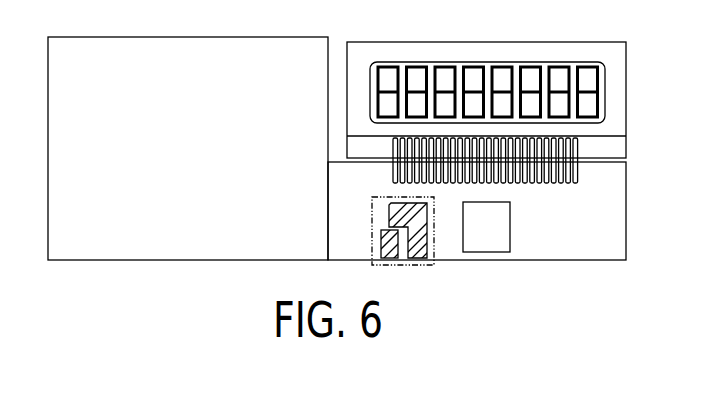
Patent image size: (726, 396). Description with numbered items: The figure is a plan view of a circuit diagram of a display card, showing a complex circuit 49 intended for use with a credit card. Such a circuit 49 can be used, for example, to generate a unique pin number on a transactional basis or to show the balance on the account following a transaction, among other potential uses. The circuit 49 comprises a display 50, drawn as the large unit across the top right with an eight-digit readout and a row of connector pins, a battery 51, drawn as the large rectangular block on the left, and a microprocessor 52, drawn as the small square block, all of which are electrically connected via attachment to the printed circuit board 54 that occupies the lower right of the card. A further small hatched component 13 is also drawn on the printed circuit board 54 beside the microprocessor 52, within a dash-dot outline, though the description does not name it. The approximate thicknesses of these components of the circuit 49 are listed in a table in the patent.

The solar cell / photovoltaic element 13 is at (416, 258).
The complex circuit 49 is at (627, 153).
The display 50 is at (627, 63).
The battery 51 is at (172, 139).
The microprocessor 52 is at (491, 243).
The printed circuit board 54 is at (577, 236).